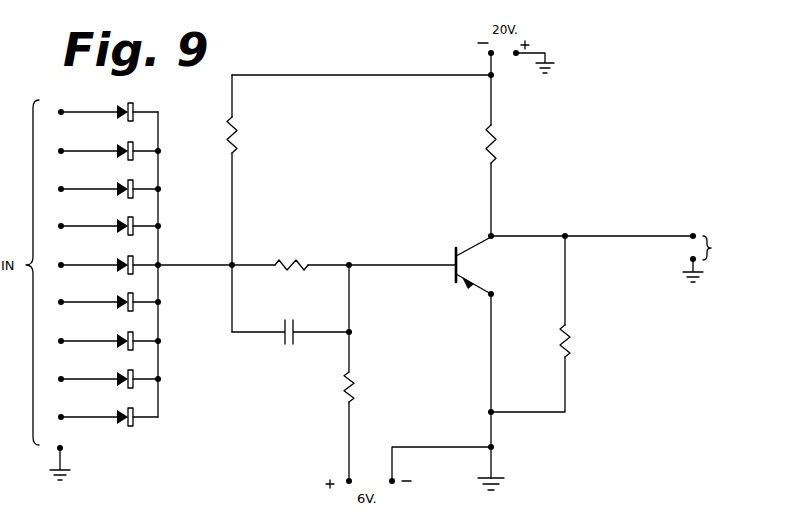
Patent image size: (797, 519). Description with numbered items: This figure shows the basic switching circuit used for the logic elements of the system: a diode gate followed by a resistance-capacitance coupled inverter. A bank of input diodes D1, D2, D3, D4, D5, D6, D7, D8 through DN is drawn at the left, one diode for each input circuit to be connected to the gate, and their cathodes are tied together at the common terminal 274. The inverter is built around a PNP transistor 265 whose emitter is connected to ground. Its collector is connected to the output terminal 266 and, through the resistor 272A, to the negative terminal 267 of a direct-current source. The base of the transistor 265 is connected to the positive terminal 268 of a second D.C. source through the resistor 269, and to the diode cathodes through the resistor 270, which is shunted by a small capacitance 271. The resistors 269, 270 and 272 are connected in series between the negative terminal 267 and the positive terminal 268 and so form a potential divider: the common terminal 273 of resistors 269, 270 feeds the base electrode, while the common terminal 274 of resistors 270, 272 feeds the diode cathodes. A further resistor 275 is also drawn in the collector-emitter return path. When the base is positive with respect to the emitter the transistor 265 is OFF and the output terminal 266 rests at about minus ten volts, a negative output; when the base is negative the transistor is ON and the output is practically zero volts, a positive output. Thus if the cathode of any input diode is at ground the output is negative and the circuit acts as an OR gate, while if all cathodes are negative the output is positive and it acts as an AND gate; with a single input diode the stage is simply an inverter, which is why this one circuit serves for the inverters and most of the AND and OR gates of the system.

The transistor 265 is at (453, 247).
The output terminal 266 is at (692, 235).
The negative terminal 267 is at (488, 53).
The positive terminal 268 is at (348, 481).
The resistor 269 is at (356, 381).
The resistor 270 is at (288, 255).
The capacitance 271 is at (293, 319).
The resistor 272 is at (239, 124).
The resistor 272A is at (499, 140).
The common terminal 273 is at (350, 268).
The common terminal 274 is at (236, 258).
The resistor 275 is at (570, 341).
The input diode D1 is at (124, 104).
The input diode D2 is at (124, 143).
The input diode D3 is at (124, 181).
The input diode D4 is at (124, 218).
The input diode D5 is at (124, 257).
The input diode D6 is at (124, 294).
The input diode D7 is at (124, 333).
The input diode D8 is at (124, 371).
The input diode DN is at (124, 409).